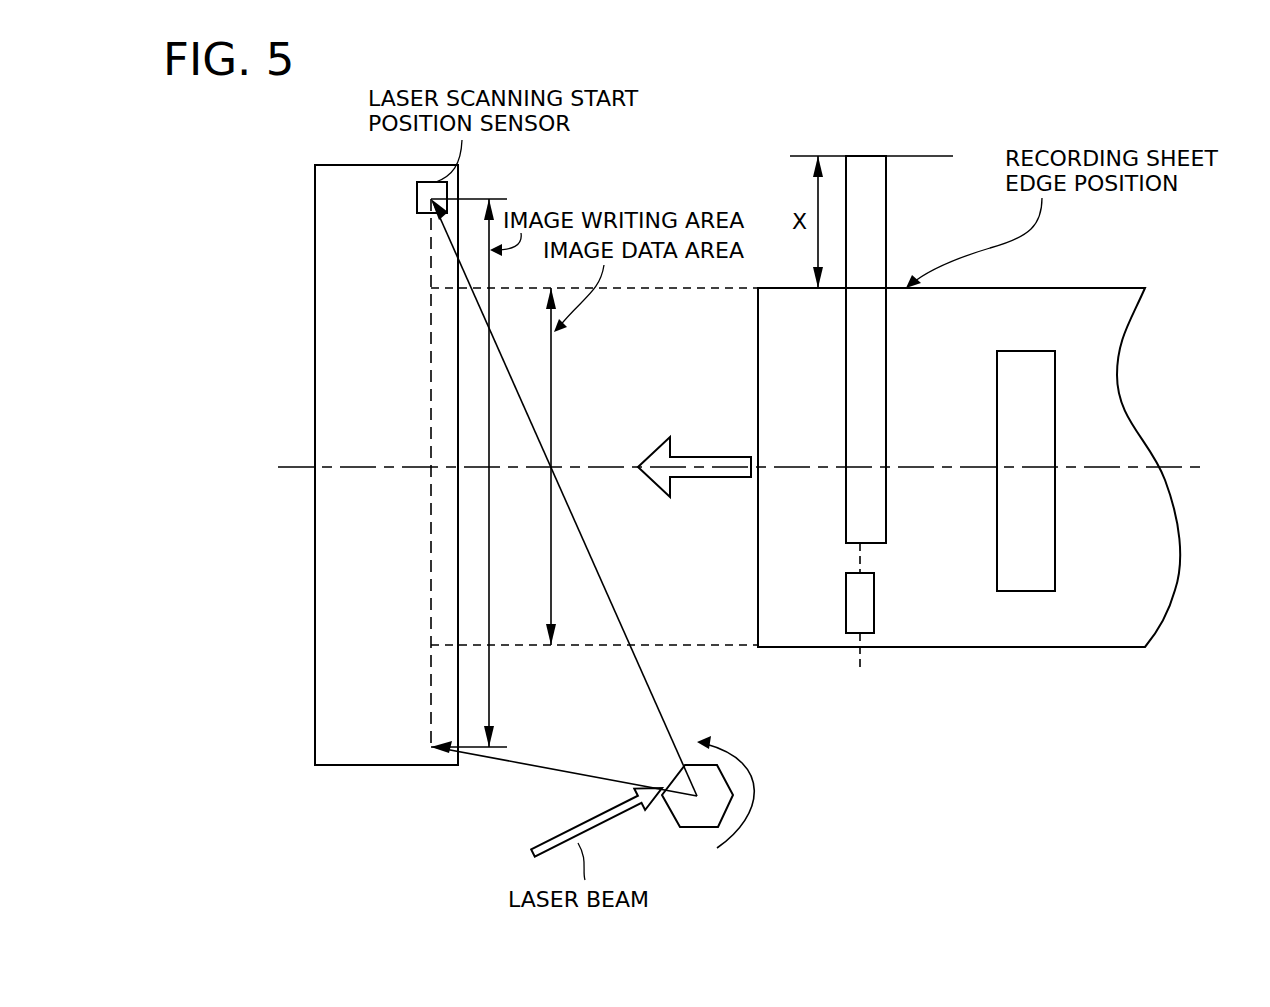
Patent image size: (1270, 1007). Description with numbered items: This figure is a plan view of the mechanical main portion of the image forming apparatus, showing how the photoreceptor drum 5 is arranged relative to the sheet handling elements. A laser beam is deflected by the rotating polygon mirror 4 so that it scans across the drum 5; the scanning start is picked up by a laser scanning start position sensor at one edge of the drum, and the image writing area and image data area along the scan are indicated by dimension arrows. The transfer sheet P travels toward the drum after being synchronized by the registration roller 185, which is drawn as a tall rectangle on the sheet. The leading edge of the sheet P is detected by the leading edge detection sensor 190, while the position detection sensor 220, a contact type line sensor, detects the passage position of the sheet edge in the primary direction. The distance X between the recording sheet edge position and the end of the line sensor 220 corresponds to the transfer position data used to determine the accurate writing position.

The photosensitive drum 5 is at (343, 164).
The polygon mirror 4 is at (693, 828).
The position detection sensor 220 is at (887, 191).
The leading edge detection sensor 190 is at (874, 625).
The registration roller 185 is at (1025, 592).
The transfer sheet P is at (1096, 288).